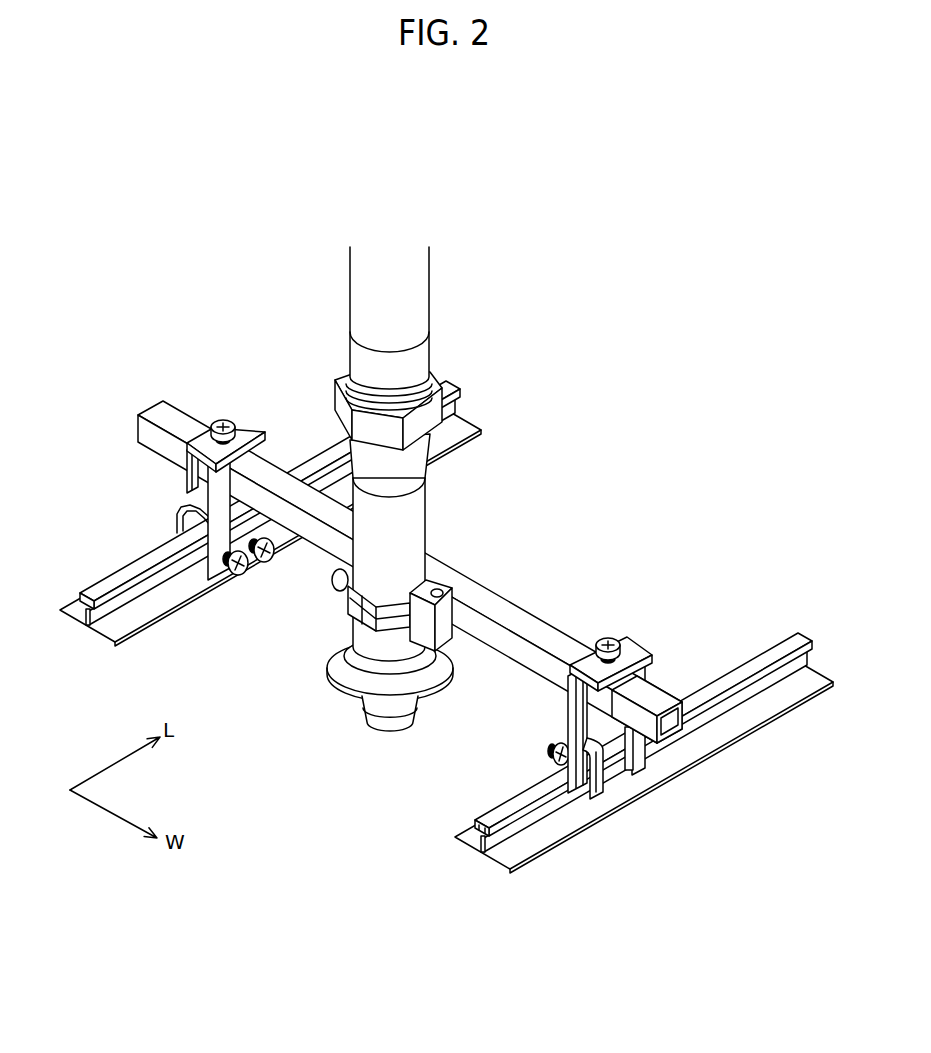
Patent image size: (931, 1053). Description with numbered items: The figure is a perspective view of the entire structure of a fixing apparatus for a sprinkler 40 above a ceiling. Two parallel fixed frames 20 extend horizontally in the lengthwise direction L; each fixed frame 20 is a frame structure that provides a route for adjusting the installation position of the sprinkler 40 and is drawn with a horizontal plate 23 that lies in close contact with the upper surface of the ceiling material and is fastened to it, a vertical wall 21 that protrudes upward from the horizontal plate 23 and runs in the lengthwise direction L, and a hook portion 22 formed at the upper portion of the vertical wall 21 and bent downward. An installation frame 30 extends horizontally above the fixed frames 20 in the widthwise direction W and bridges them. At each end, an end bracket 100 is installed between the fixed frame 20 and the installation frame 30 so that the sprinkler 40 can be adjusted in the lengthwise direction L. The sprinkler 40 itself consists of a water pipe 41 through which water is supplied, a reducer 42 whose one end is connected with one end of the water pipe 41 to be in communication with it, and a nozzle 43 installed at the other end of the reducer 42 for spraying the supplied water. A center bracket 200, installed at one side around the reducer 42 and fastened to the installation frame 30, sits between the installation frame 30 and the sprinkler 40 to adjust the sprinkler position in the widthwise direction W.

The fixed frame 20 is at (446, 646).
The vertical wall 21 is at (480, 839).
The hook portion 22 is at (497, 832).
The horizontal plate 23 is at (543, 833).
The installation frame 30 is at (540, 617).
The sprinkler 40 is at (377, 510).
The water pipe 41 is at (430, 301).
The reducer 42 is at (428, 521).
The nozzle 43 is at (360, 706).
The end bracket 100 is at (651, 634).
The center bracket 200 is at (314, 609).